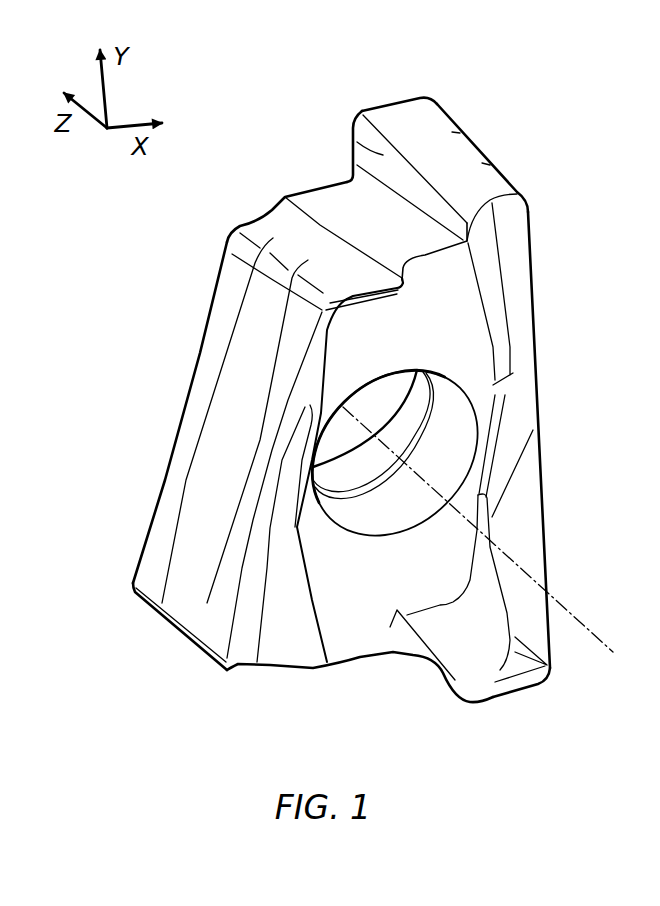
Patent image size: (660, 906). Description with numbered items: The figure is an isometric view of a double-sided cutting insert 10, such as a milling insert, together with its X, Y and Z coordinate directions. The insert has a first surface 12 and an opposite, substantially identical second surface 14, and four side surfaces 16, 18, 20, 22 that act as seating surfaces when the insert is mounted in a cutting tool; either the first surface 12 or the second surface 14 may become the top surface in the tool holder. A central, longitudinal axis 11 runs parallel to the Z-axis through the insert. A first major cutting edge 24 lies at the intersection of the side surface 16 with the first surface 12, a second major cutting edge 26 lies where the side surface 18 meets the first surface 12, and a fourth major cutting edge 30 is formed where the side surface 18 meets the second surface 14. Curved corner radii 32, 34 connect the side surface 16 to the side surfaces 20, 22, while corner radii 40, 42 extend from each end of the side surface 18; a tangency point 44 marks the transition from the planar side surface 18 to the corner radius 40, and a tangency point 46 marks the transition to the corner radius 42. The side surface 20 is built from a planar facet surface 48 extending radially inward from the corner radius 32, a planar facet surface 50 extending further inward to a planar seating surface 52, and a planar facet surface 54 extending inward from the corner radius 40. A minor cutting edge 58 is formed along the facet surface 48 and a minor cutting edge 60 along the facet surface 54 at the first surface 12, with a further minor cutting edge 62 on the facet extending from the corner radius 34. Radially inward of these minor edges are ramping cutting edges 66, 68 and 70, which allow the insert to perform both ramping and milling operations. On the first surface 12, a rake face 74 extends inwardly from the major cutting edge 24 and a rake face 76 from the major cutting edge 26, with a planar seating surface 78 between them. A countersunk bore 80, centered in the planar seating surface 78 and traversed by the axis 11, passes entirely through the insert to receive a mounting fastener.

The cutting insert 10 is at (588, 102).
The central, longitudinal axis 11 is at (578, 622).
The first surface 12 is at (466, 357).
The second surface 14 is at (277, 184).
The side surface 16 is at (542, 460).
The side surface 18 is at (204, 433).
The side surface 20 is at (396, 221).
The side surface 22 is at (293, 684).
The first major cutting edge 24 is at (538, 417).
The second major cutting edge 26 is at (247, 538).
The fourth major cutting edge 30 is at (200, 343).
The corner radius 32 is at (518, 184).
The corner radius 34 is at (552, 682).
The corner radius 40 is at (244, 237).
The corner radius 42 is at (180, 640).
The tangency point 44 is at (242, 261).
The tangency point 46 is at (175, 612).
The planar facet surface 48 is at (416, 123).
The planar facet surface 50 is at (350, 135).
The planar seating surface 52 is at (337, 205).
The planar facet surface 54 is at (297, 227).
The minor cutting edge 58 is at (400, 98).
The minor cutting edge 60 is at (357, 293).
The minor cutting edge 62 is at (503, 700).
The ramping cutting edge 66 is at (352, 152).
The ramping cutting edge 68 is at (405, 265).
The ramping cutting edge 70 is at (442, 680).
The rake face 74 is at (515, 262).
The rake face 76 is at (300, 388).
The planar seating surface 78 is at (447, 327).
The countersunk bore 80 is at (350, 520).